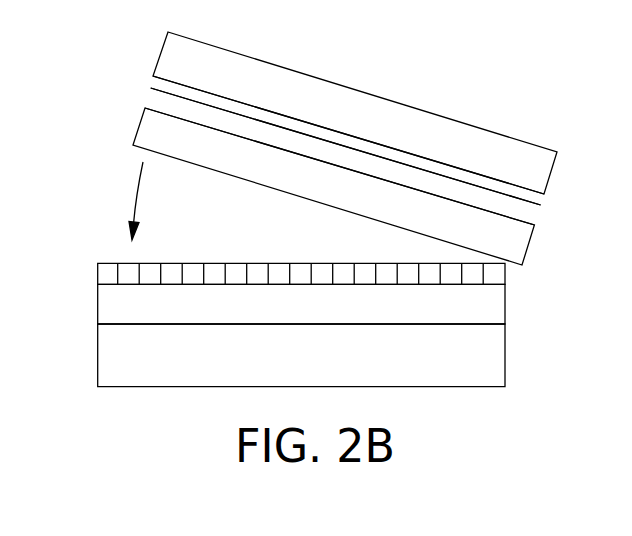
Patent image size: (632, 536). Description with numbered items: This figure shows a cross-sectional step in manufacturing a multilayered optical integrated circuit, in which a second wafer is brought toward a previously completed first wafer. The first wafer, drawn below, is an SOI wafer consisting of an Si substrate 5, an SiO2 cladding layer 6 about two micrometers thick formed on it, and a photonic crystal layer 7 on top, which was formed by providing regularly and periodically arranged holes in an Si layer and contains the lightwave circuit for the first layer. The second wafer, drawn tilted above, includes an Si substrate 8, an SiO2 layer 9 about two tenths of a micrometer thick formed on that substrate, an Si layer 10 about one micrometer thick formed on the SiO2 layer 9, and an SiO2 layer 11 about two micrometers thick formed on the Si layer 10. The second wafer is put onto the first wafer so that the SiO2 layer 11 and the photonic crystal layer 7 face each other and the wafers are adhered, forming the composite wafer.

The Si substrate 5 is at (108, 356).
The SiO2 cladding layer 6 is at (104, 304).
The photonic crystal layer 7 is at (100, 272).
The Si substrate 8 is at (541, 173).
The SiO2 layer 9 is at (533, 198).
The Si layer 10 is at (532, 218).
The SiO2 layer 11 is at (525, 252).